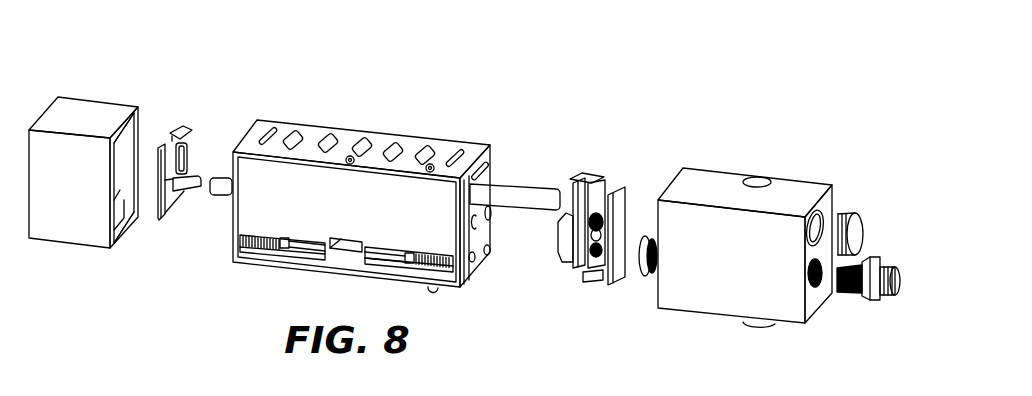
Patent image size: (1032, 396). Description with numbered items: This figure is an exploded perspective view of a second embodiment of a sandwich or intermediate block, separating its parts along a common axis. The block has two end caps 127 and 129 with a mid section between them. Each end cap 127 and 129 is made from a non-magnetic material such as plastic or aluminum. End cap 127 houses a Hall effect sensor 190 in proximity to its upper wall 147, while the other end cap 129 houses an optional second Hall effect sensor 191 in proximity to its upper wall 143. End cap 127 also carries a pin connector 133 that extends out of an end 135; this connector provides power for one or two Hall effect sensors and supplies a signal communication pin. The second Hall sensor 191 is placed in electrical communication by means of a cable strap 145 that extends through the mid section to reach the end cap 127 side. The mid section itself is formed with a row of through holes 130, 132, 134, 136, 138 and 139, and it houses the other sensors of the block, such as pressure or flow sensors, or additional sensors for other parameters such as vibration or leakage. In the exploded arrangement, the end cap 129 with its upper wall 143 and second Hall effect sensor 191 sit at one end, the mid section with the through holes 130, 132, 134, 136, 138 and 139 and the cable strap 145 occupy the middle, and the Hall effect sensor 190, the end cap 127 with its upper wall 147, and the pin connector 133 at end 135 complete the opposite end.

The end cap 127 is at (722, 297).
The end cap 129 is at (68, 228).
The through hole 130 is at (297, 130).
The through hole 132 is at (330, 132).
The pin connector 133 is at (890, 272).
The through hole 134 is at (363, 137).
The end 135 is at (818, 303).
The through hole 136 is at (388, 138).
The through hole 138 is at (425, 145).
The through hole 139 is at (460, 143).
The upper wall 143 is at (98, 112).
The cable strap 145 is at (525, 198).
The upper wall 147 is at (790, 192).
The Hall effect sensor 190 is at (580, 172).
The second Hall effect sensor 191 is at (170, 135).